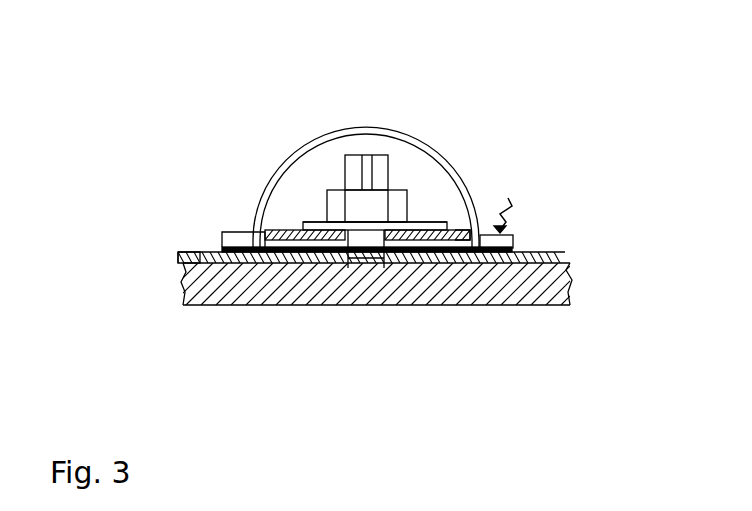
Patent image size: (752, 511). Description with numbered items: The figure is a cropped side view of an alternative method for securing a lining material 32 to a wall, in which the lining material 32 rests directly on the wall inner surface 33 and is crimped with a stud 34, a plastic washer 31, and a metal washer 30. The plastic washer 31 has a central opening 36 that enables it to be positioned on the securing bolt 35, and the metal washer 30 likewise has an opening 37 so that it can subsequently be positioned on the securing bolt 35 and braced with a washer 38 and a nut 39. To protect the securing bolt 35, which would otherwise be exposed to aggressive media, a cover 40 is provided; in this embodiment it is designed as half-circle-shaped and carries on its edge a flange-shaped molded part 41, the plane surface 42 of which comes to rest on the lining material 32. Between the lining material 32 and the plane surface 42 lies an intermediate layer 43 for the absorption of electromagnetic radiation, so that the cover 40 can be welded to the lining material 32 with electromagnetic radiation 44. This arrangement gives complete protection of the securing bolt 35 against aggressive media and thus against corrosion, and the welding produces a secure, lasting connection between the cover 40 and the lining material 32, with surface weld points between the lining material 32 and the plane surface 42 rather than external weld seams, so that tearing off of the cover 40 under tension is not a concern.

The metal washer 30 is at (432, 235).
The plastic washer 31 is at (462, 238).
The lining material 32 is at (555, 264).
The wall inner surface 33 is at (507, 293).
The stud 34 is at (386, 232).
The securing bolt 35 is at (345, 265).
The central opening 36 is at (372, 262).
The opening 37 is at (363, 217).
The washer 38 is at (330, 222).
The nut 39 is at (358, 224).
The cover 40 is at (380, 140).
The flange-shaped molded part 41 is at (178, 266).
The plane surface 42 is at (236, 244).
The intermediate layer 43 is at (508, 251).
The electromagnetic radiation 44 is at (508, 198).